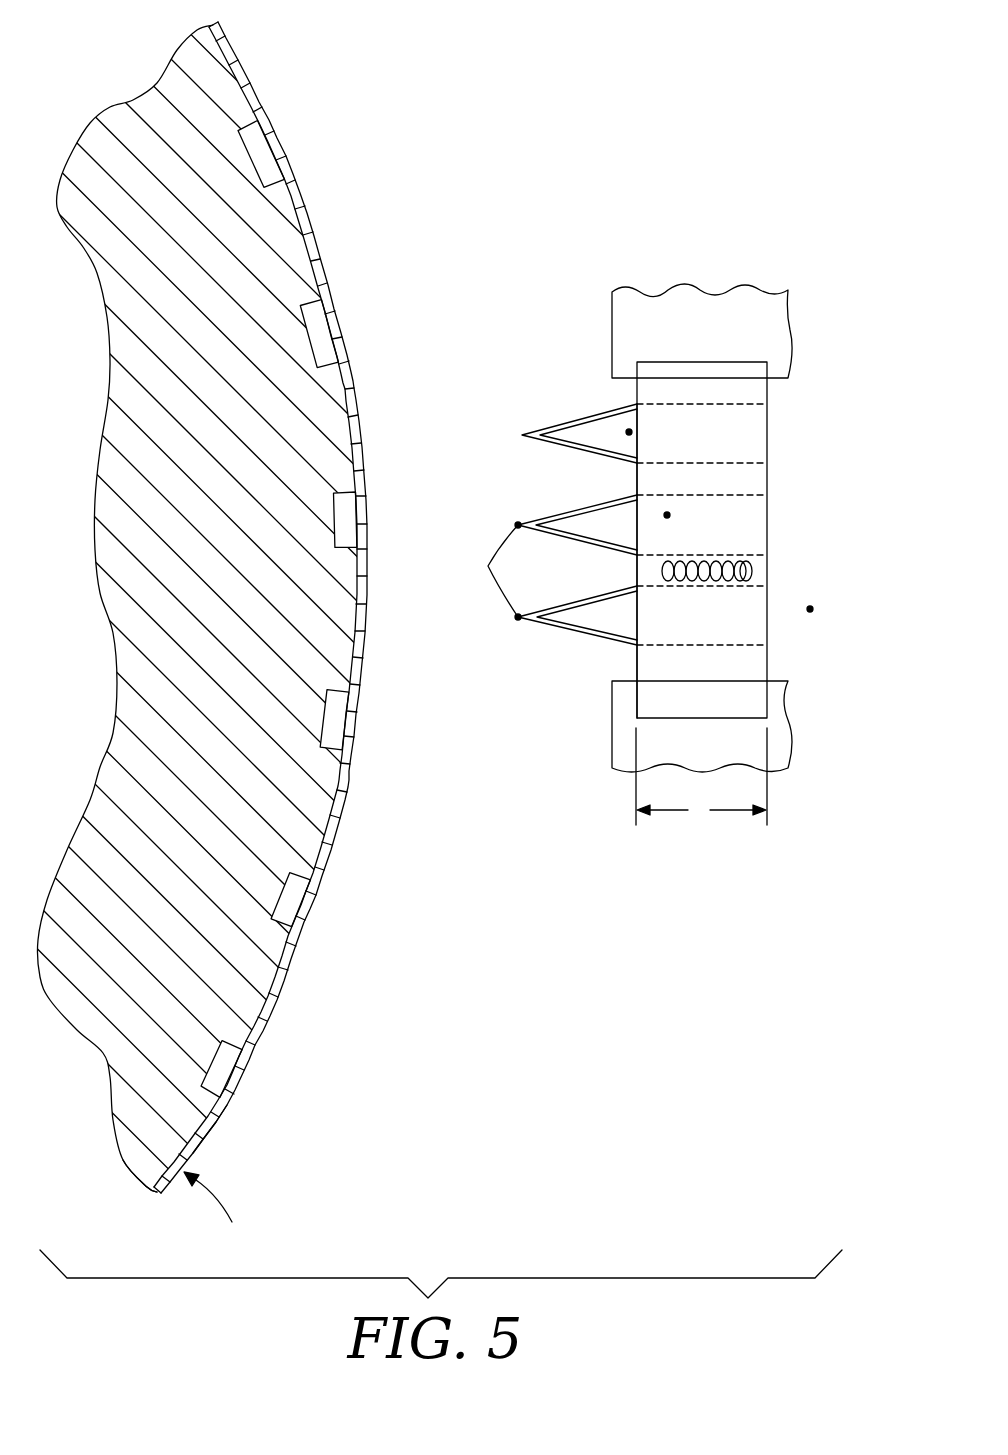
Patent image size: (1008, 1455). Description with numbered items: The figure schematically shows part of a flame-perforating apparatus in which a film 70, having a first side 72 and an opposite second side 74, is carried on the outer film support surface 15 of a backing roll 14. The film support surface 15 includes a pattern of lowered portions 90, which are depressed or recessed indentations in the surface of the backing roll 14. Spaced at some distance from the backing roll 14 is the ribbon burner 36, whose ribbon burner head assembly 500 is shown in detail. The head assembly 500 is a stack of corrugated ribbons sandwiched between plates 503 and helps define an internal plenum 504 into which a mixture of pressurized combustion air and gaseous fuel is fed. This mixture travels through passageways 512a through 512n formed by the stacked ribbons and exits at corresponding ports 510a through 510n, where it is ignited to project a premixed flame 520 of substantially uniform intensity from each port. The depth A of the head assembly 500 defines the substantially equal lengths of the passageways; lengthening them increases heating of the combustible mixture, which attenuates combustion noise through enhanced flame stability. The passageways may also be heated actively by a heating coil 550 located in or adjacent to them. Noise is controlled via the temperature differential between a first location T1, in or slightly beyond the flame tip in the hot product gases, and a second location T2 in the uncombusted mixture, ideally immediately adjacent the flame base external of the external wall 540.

The backing roll 14 is at (147, 106).
The outer film support surface 15 is at (232, 65).
The lowered portions 90 is at (262, 140).
The first side 72 is at (212, 1125).
The second side 74 is at (152, 1152).
The film 70 is at (212, 1211).
The ribbon burner head assembly 500 is at (670, 518).
The burner 36 is at (727, 499).
The plates 503 is at (730, 289).
The internal plenum 504 is at (843, 503).
The external wall 540 is at (636, 663).
The passageway 512a is at (660, 404).
The passageway 512n is at (680, 635).
The port 510a is at (637, 405).
The port 510n is at (636, 618).
The premixed flame 520 is at (570, 420).
The heating coil 550 is at (752, 571).
The first location T1 is at (489, 571).
The second location T2 is at (629, 432).
The depth A is at (701, 776).